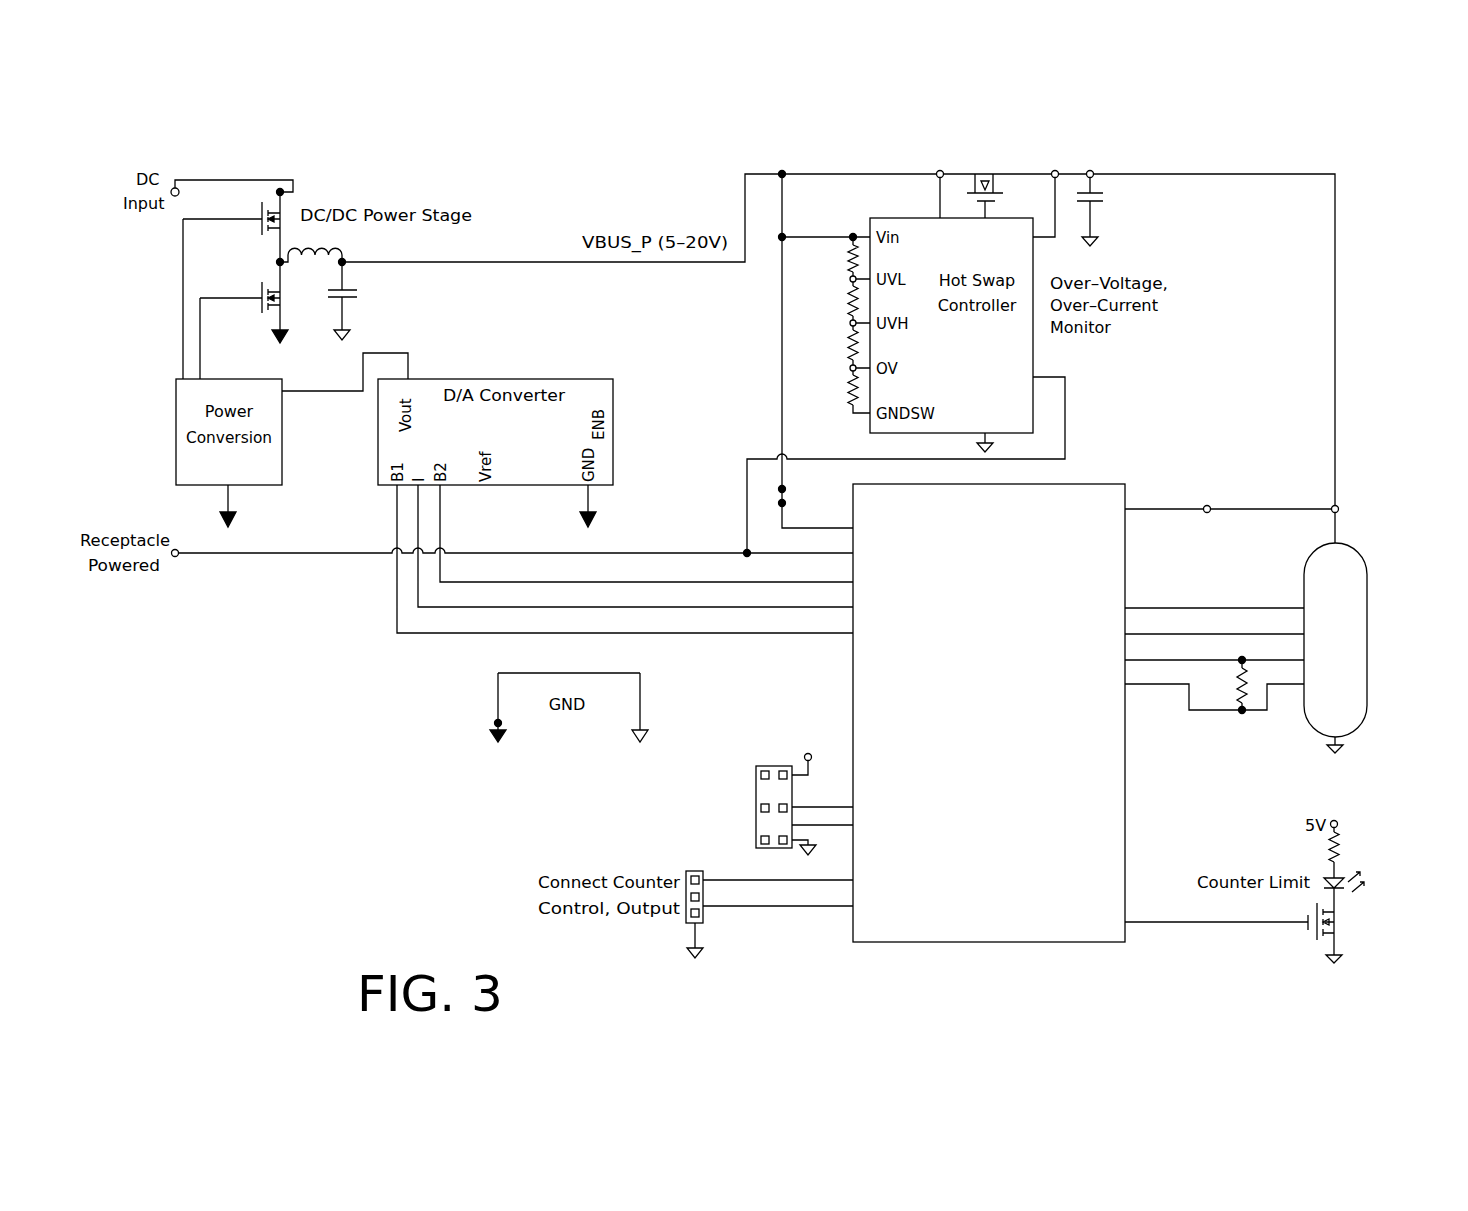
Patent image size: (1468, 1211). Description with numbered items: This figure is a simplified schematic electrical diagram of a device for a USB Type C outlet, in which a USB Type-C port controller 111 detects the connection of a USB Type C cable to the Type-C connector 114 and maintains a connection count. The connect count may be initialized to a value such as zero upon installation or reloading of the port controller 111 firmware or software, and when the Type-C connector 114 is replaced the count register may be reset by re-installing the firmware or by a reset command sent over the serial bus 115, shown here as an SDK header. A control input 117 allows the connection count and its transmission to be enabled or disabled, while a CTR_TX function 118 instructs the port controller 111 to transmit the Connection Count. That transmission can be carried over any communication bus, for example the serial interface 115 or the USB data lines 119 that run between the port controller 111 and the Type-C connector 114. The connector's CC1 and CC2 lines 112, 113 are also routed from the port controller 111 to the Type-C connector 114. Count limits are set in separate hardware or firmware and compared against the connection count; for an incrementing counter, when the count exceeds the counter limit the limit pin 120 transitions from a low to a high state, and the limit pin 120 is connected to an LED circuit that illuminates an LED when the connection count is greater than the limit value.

The port controller 111 is at (1013, 942).
The CC1 line 112 is at (1304, 608).
The CC2 line 113 is at (1304, 634).
The Type-C connector 114 is at (1367, 645).
The serial bus 115 is at (790, 826).
The control input 117 is at (855, 907).
The CTR_TX function 118 is at (855, 880).
The USB data lines 119 is at (1213, 698).
The limit pin 120 is at (1122, 908).